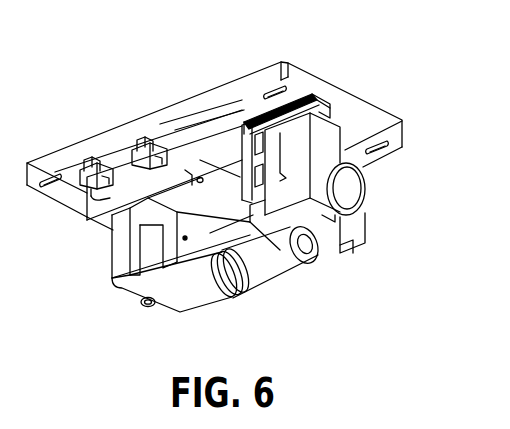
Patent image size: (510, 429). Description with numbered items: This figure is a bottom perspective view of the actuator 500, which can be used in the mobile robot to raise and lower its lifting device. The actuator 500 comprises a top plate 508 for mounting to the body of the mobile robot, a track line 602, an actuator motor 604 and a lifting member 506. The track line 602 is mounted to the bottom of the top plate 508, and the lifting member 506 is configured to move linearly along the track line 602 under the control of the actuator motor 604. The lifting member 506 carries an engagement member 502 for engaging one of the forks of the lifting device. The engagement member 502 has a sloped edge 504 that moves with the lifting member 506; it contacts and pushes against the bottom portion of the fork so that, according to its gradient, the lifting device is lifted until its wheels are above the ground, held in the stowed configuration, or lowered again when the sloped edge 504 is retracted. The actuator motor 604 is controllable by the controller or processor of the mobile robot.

The actuator 500 is at (141, 88).
The engagement member 502 is at (340, 212).
The sloped edge 504 is at (226, 212).
The lifting member 506 is at (220, 190).
The top plate 508 is at (228, 95).
The track line 602 is at (310, 105).
The actuator motor 604 is at (267, 262).